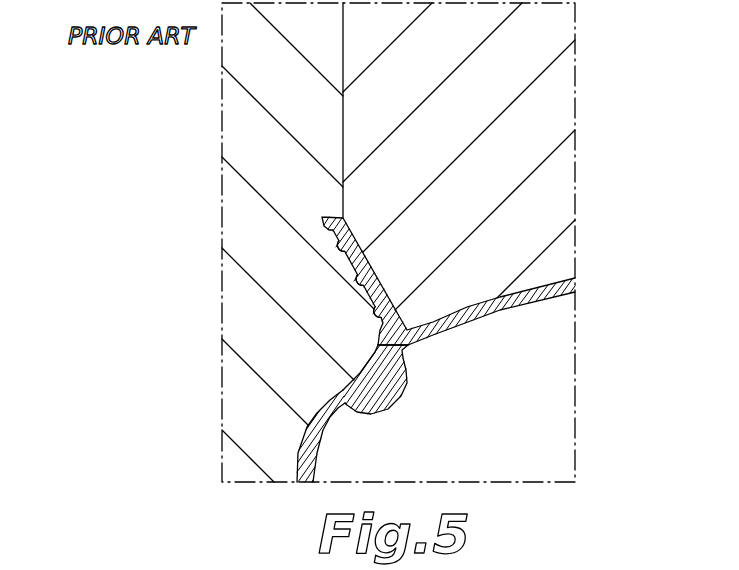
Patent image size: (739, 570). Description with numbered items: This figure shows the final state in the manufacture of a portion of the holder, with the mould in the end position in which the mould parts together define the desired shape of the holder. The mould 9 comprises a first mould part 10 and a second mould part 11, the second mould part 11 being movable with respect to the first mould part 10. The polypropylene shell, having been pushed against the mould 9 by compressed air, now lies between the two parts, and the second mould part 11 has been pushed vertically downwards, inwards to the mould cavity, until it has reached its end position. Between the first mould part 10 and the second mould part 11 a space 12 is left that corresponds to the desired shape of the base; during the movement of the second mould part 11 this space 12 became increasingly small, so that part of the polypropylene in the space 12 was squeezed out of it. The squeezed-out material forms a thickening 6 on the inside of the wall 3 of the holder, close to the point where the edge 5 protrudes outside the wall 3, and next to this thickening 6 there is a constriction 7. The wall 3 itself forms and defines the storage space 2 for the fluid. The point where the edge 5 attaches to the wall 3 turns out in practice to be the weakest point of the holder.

The mould 9 is at (399, 242).
The first mould part 10 is at (258, 144).
The second mould part 11 is at (505, 144).
The space 12 is at (340, 255).
The edge 5 is at (350, 273).
The constriction 7 is at (378, 343).
The thickening 6 is at (368, 385).
The wall 3 is at (308, 448).
The storage space 2 is at (530, 434).